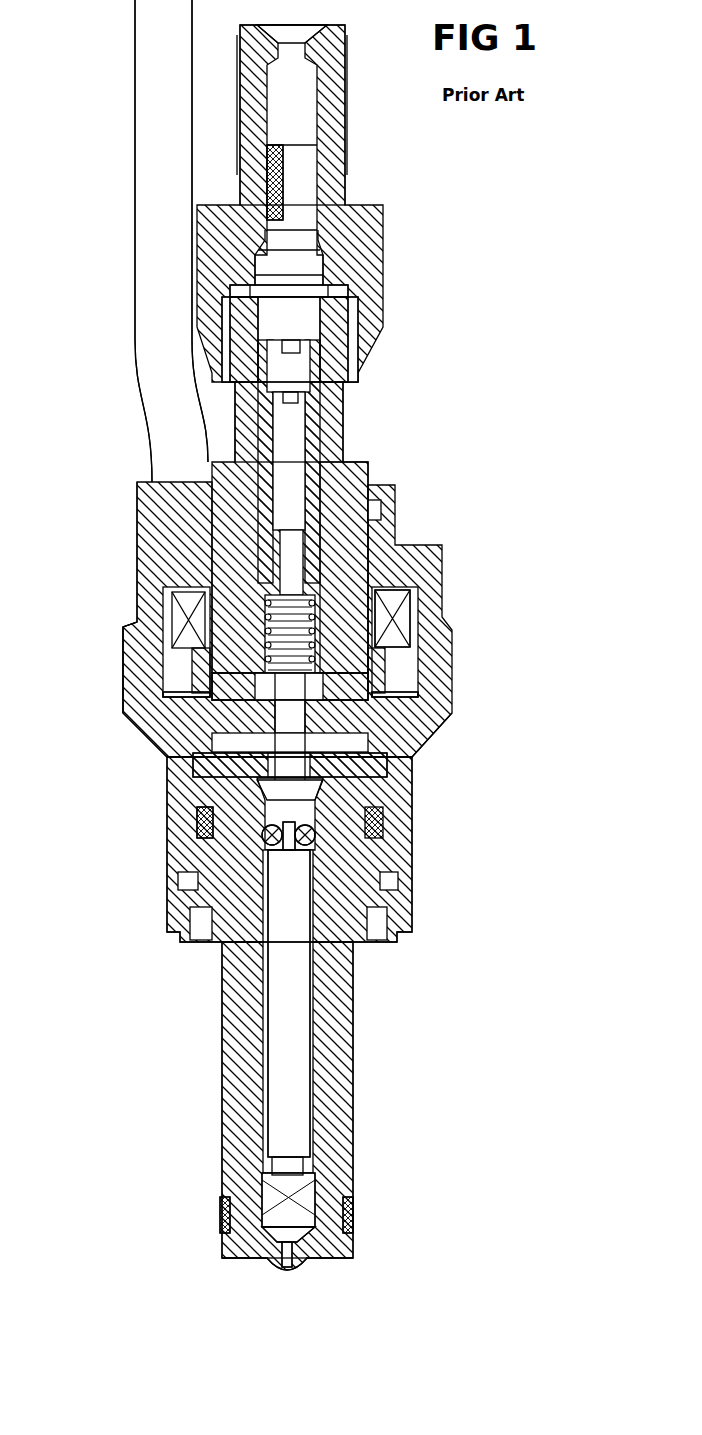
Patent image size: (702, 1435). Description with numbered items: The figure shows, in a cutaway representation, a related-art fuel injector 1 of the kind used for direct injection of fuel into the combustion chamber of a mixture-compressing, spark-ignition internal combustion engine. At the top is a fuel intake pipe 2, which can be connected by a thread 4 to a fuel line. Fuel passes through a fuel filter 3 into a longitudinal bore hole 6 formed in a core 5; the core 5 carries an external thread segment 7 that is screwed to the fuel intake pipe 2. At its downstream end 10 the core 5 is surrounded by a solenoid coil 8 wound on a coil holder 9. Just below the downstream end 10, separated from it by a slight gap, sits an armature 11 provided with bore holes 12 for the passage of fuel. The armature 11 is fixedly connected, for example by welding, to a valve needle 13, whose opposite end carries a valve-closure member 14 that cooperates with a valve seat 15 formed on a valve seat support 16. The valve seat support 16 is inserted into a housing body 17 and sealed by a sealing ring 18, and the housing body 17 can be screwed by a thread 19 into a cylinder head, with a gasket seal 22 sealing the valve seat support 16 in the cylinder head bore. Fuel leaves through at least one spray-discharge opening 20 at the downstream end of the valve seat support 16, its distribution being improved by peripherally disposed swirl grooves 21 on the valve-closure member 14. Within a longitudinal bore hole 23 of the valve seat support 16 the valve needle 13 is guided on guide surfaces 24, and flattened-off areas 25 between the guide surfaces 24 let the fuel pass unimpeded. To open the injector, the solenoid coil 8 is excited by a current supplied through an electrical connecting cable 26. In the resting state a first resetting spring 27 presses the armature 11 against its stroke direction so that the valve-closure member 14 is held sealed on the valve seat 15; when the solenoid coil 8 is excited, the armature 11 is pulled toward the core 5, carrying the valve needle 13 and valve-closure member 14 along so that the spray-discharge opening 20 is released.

The fuel injector 1 is at (518, 384).
The fuel intake pipe 2 is at (330, 88).
The fuel filter 3 is at (293, 168).
The thread 4 is at (347, 55).
The core 5 is at (335, 408).
The longitudinal bore hole 6 is at (322, 322).
The external thread segment 7 is at (360, 338).
The solenoid coil 8 is at (400, 613).
The coil holder 9 is at (385, 660).
The downstream end 10 is at (200, 717).
The armature 11 is at (375, 715).
The bore holes 12 is at (390, 698).
The valve needle 13 is at (290, 762).
The valve-closure member 14 is at (322, 1242).
The valve seat 15 is at (270, 1262).
The valve seat support 16 is at (340, 1070).
The housing body 17 is at (397, 820).
The sealing ring 18 is at (197, 818).
The thread 19 is at (130, 648).
The spray-discharge opening 20 is at (287, 1262).
The swirl grooves 21 is at (280, 1203).
The gasket seal 22 is at (355, 1208).
The longitudinal bore hole 23 is at (310, 1022).
The guide surfaces 24 is at (290, 850).
The flattened-off areas 25 is at (305, 840).
The electrical connecting cable 26 is at (152, 216).
The first resetting spring 27 is at (330, 585).